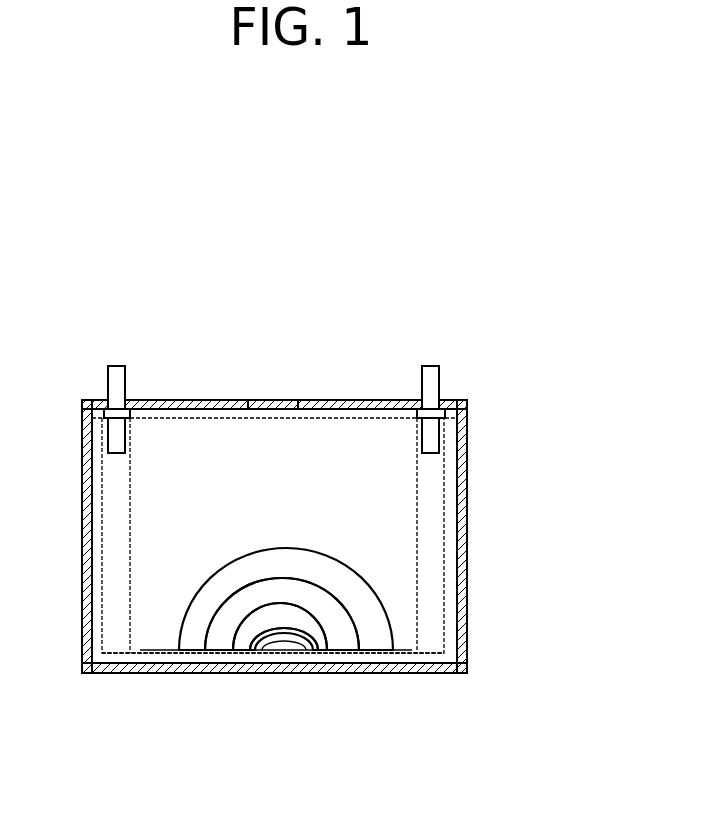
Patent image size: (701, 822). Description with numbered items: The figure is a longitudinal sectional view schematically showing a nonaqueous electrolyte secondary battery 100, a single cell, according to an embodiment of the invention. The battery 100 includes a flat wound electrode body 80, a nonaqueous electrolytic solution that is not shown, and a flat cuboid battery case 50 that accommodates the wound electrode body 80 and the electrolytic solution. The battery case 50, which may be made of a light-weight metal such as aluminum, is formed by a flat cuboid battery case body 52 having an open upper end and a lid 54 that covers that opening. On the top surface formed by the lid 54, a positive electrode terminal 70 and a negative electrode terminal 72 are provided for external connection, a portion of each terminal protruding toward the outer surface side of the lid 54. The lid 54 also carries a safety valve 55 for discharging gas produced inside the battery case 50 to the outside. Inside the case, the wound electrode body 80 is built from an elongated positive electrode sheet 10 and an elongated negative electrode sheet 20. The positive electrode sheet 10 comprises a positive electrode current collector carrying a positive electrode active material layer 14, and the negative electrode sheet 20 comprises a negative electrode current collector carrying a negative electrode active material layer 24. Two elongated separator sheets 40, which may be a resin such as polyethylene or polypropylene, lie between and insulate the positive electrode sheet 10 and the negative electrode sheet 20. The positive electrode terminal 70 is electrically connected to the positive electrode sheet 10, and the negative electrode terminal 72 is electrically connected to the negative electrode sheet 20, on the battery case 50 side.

The nonaqueous electrolyte secondary battery 100 is at (463, 315).
The battery case 50 is at (312, 507).
The battery case body 52 is at (467, 635).
The lid 54 is at (274, 375).
The safety valve 55 is at (268, 405).
The positive electrode terminal 70 is at (122, 378).
The negative electrode terminal 72 is at (431, 378).
The wound electrode body 80 is at (403, 655).
The positive electrode sheet 10 is at (272, 657).
The positive electrode active material layer 14 is at (192, 648).
The negative electrode sheet 20 is at (279, 684).
The negative electrode active material layer 24 is at (279, 684).
The separator sheet 40 is at (266, 657).